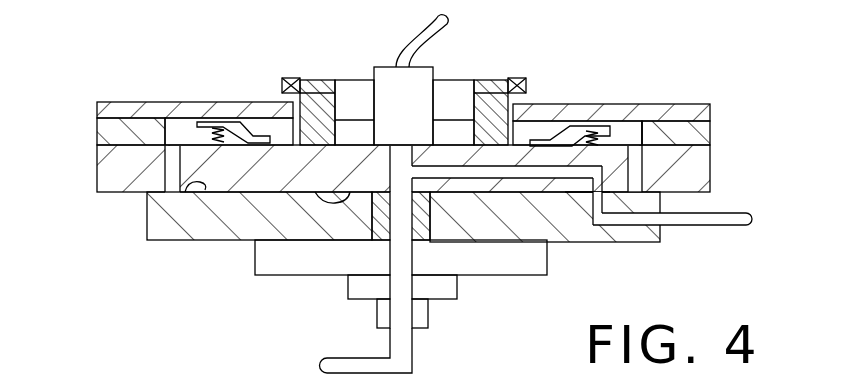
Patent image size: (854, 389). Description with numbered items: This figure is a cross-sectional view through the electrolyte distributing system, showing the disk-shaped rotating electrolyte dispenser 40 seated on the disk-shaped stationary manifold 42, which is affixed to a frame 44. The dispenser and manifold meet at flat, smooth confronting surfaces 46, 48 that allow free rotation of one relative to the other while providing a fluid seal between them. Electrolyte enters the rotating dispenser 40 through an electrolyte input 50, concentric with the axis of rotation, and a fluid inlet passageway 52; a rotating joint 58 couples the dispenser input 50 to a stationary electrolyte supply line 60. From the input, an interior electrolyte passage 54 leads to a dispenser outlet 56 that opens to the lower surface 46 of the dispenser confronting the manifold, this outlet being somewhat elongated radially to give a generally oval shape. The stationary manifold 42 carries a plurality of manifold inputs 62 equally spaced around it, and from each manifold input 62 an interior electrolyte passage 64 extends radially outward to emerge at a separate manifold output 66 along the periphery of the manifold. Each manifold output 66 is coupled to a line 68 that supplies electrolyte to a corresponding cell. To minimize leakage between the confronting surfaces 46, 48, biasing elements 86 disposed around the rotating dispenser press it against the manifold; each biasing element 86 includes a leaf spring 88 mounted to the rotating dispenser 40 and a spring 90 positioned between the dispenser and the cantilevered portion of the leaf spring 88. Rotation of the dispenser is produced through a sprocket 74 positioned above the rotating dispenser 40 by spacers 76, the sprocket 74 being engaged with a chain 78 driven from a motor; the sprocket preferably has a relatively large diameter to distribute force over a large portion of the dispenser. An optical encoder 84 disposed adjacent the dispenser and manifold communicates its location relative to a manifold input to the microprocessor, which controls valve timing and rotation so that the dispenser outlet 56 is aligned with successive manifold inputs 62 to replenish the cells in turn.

The rotating electrolyte dispenser 40 is at (562, 193).
The stationary manifold 42 is at (229, 217).
The frame 44 is at (117, 175).
The confronting surface of rotating dispenser 46 is at (348, 190).
The confronting surface of stationary manifold 48 is at (150, 222).
The electrolyte input 50 is at (421, 255).
The fluid inlet passageway 52 is at (383, 272).
The interior electrolyte passage 54 is at (497, 172).
The dispenser outlet 56 is at (607, 173).
The rotating joint 58 is at (366, 335).
The stationary electrolyte supply line 60 is at (345, 358).
The manifold input 62 is at (568, 197).
The interior electrolyte passage 64 is at (647, 220).
The manifold output 66 is at (665, 225).
The line 68 is at (722, 212).
The sprocket 74 is at (488, 82).
The spacers 76 is at (512, 130).
The chain 78 is at (527, 84).
The optical encoder 84 is at (418, 78).
The biasing elements 86 is at (625, 123).
The leaf spring 88 is at (257, 127).
The spring 90 is at (194, 134).